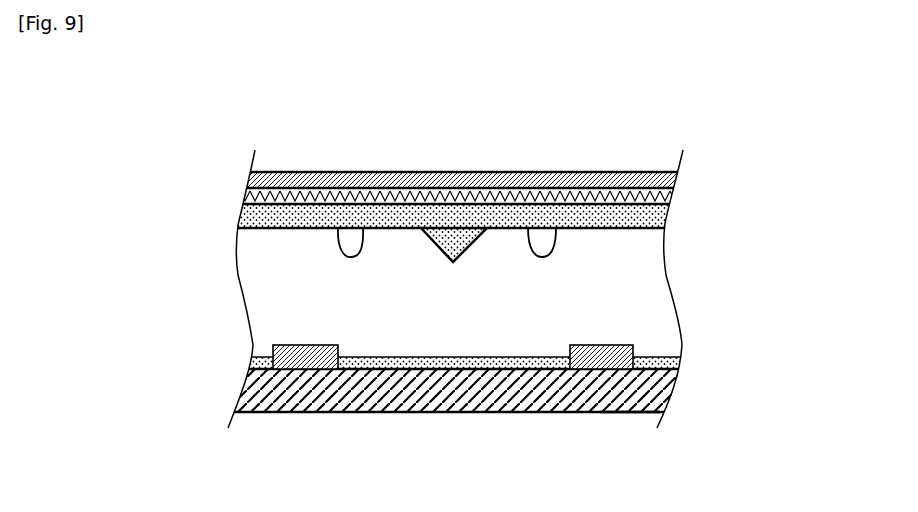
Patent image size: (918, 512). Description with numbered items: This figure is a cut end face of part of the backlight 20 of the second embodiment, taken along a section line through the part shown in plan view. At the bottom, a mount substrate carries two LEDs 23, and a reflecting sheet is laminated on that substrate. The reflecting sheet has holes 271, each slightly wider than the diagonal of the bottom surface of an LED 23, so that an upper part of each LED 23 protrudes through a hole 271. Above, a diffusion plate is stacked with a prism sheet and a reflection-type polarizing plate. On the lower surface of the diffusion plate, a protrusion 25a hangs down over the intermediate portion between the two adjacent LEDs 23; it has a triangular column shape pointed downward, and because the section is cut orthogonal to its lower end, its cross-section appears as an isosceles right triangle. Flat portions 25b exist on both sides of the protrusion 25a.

The backlight 20 is at (706, 163).
The protrusion 25a is at (445, 259).
The flat portion 25b is at (344, 228).
The LED 23 is at (270, 350).
The hole 271 is at (634, 413).